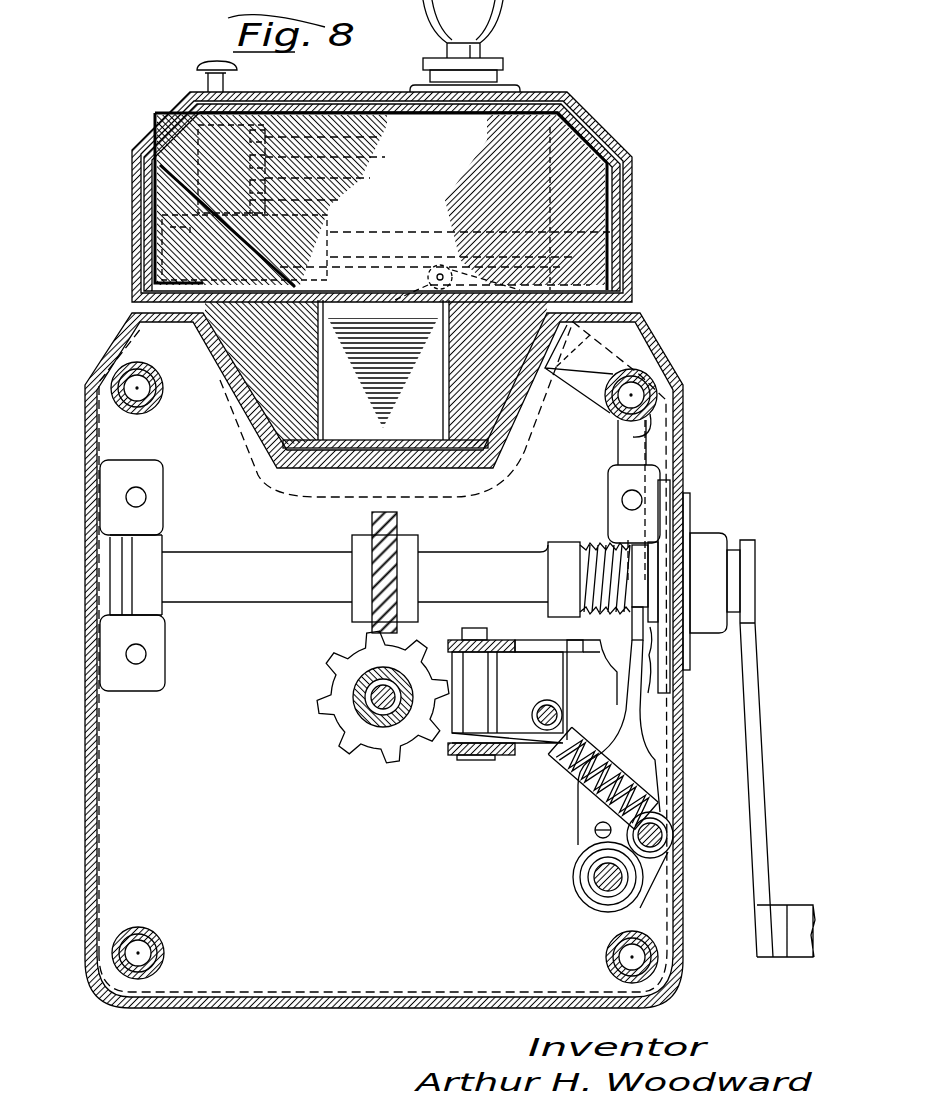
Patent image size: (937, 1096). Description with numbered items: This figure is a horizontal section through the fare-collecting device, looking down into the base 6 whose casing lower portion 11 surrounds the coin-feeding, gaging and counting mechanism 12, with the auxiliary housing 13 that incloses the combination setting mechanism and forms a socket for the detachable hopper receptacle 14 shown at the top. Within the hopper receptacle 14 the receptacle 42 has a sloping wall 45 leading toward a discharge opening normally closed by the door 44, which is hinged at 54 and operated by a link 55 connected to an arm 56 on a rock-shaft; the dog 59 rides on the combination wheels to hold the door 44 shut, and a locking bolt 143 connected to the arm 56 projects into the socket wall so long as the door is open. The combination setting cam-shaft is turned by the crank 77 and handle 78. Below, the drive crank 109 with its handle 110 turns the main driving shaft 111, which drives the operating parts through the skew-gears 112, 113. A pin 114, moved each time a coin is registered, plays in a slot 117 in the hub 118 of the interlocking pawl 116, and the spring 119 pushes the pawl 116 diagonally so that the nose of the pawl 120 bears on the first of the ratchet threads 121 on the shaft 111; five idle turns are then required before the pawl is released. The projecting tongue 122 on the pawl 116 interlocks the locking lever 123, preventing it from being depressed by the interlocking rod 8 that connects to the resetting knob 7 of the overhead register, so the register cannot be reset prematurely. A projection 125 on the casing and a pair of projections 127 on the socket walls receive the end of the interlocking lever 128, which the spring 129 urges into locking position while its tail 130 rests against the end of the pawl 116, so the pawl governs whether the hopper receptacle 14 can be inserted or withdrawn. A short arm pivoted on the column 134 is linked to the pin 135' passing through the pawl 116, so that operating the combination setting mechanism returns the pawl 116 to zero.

The base 6 is at (80, 334).
The resetting knob 7 is at (127, 112).
The interlocking rod 8 is at (352, 694).
The lower portion of casing 11 is at (85, 715).
The coin-feeding, gaging and counting mechanism 12 is at (264, 775).
The auxiliary housing 13 is at (633, 204).
The hopper receptacle 14 is at (112, 228).
The receptacle 42 is at (400, 234).
The door 44 is at (382, 355).
The sloping wall 45 is at (435, 233).
The hinge 54 is at (416, 333).
The link 55 is at (362, 333).
The arm 56 is at (135, 255).
The dog 59 is at (268, 92).
The crank 77 is at (503, 62).
The handle 78 is at (450, 14).
The crank 109 is at (750, 709).
The handle 110 is at (793, 925).
The main driving shaft 111 is at (243, 580).
The skew-gear 112 is at (353, 574).
The skew-gear 113 is at (350, 660).
The pin 114 is at (594, 920).
The interlocking pawl 116 is at (640, 771).
The slot 117 is at (662, 862).
The hub 118 is at (650, 886).
The spring 119 is at (580, 788).
The nose of the pawl 120 is at (627, 638).
The ratchet threads 121 is at (607, 572).
The projecting tongue 122 is at (574, 633).
The locking lever 123 is at (555, 693).
The projection 125 is at (579, 369).
The projections 127 is at (582, 349).
The interlocking lever 128 is at (592, 382).
The spring 129 is at (652, 428).
The tail 130 is at (633, 451).
The column 134 is at (656, 396).
The pin 135' is at (562, 832).
The locking bolt 143 is at (401, 232).